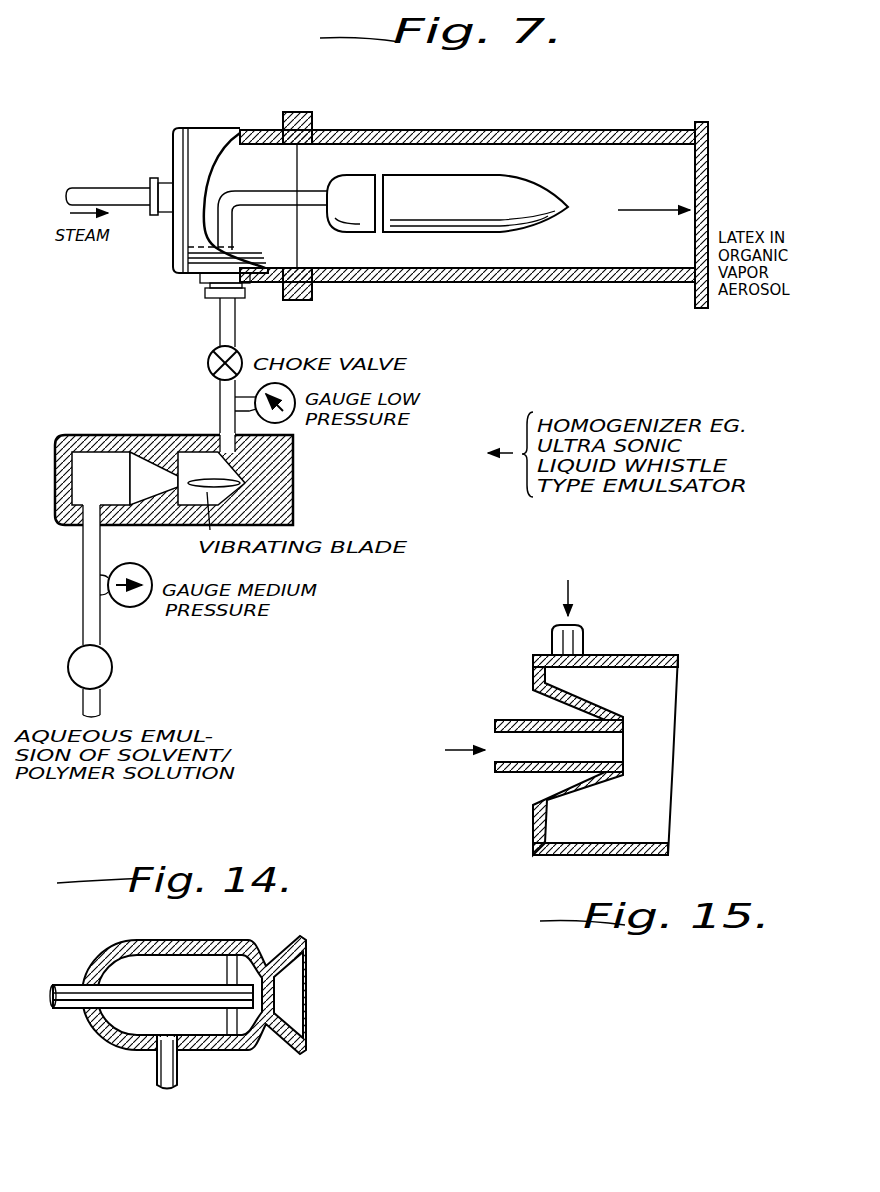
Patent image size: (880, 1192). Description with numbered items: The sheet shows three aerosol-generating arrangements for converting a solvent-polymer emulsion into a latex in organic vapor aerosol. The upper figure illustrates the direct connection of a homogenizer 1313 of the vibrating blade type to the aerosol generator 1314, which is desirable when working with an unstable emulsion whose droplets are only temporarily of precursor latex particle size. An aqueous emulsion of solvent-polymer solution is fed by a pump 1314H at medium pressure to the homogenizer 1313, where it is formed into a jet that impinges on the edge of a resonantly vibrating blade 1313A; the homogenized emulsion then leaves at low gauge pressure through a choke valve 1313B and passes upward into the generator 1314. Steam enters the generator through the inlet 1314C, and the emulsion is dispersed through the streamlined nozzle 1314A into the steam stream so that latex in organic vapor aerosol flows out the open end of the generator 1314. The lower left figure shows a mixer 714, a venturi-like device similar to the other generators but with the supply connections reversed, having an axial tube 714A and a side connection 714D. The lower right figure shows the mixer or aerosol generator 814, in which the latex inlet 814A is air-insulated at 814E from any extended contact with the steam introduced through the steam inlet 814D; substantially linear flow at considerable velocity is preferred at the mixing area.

In FIG. 7, the aerosol generator 1314 is at (480, 120).
In FIG. 7, the streamlined nozzle 1314A is at (452, 217).
In FIG. 7, the steam inlet 1314C is at (116, 172).
In FIG. 7, the homogenizer 1313 is at (298, 490).
In FIG. 7, the resonantly vibrating blade 1313A is at (197, 478).
In FIG. 7, the choke valve 1313B is at (208, 366).
In FIG. 7, the pump 1314H is at (112, 675).
In FIG. 14, the mixer 714 is at (243, 946).
In FIG. 14, the inner tube 714A is at (72, 1005).
In FIG. 14, the outlet tube 714D is at (155, 1075).
In FIG. 15, the mixer or aerosol generator 814 is at (680, 662).
In FIG. 15, the latex inlet 814A is at (507, 752).
In FIG. 15, the steam inlet 814D is at (584, 642).
In FIG. 15, the air insulation 814E is at (545, 708).